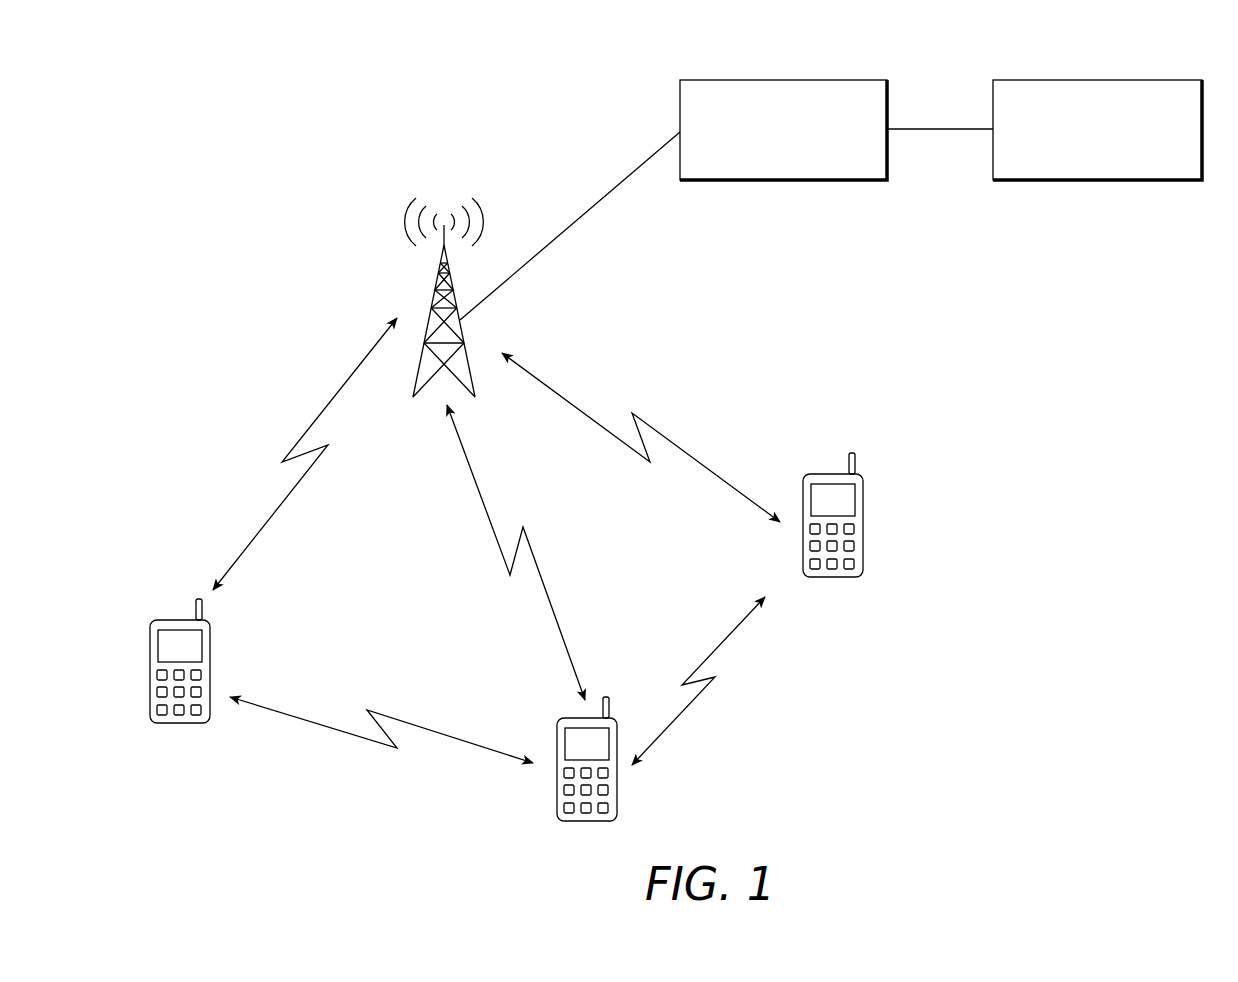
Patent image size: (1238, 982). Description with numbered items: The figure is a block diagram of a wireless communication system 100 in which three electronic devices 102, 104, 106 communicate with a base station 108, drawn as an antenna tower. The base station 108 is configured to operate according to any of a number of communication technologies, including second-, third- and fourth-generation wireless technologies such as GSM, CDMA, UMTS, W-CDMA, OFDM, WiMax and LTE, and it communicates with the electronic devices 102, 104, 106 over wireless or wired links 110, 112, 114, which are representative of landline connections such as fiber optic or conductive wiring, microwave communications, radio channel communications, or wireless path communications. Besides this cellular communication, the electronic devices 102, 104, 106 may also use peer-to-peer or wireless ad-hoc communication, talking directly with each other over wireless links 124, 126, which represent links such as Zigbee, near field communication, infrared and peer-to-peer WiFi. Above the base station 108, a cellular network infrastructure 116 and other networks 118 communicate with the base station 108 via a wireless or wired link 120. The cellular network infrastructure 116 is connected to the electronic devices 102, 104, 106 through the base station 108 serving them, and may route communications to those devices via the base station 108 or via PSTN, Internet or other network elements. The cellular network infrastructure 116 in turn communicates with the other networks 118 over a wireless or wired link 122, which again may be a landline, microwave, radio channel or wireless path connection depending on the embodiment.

The wireless communication system 100 is at (152, 96).
The electronic device 102 is at (150, 668).
The electronic device 104 is at (617, 795).
The electronic device 106 is at (863, 525).
The base station 108 is at (437, 268).
The wireless or wired link 110 is at (272, 518).
The wireless or wired link 112 is at (542, 578).
The wireless or wired link 114 is at (660, 433).
The cellular network infrastructure 116 is at (877, 80).
The other networks 118 is at (1192, 80).
The wireless or wired link 120 is at (568, 228).
The wireless or wired link 122 is at (940, 131).
The wireless link 124 is at (425, 728).
The wireless link 126 is at (725, 645).